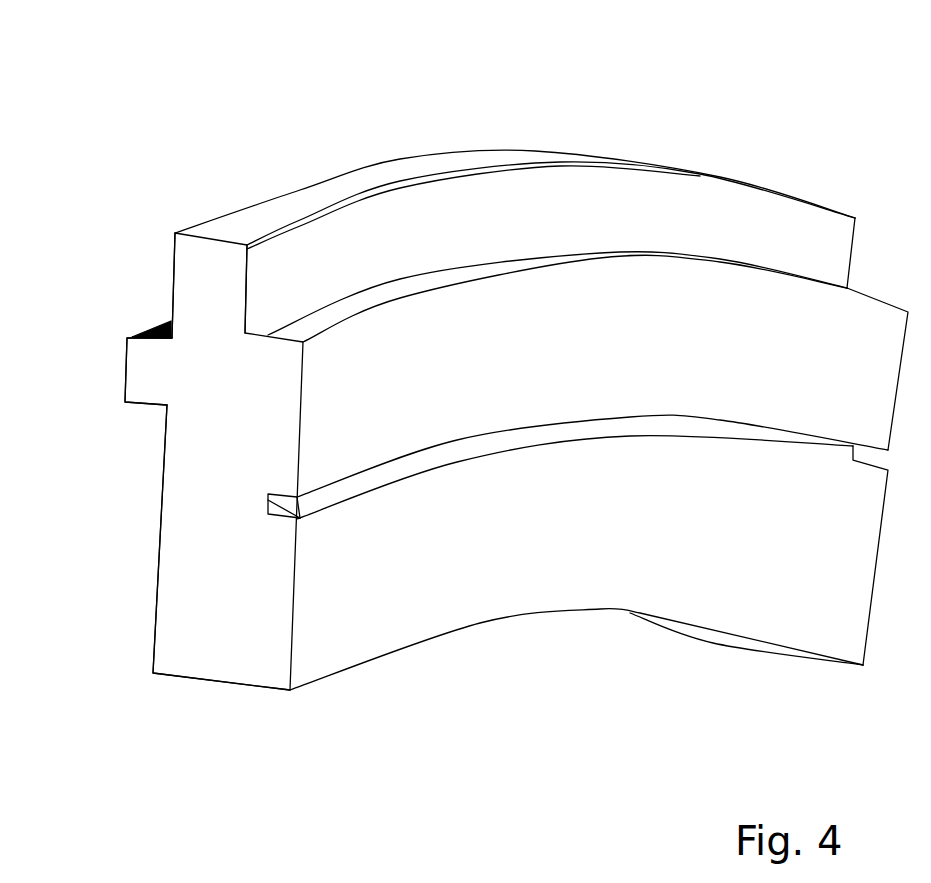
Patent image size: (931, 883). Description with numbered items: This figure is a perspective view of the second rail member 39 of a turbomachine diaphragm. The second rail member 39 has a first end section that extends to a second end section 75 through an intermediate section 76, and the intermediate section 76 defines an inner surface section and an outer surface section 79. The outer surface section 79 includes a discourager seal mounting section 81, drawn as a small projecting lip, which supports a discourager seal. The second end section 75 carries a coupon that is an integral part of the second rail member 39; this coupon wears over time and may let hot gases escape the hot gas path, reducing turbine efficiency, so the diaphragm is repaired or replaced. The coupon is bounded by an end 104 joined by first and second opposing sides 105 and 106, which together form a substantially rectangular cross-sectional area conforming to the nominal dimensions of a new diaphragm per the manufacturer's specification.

The second rail member 39 is at (110, 587).
The second end section 75 is at (132, 368).
The intermediate section 76 is at (207, 620).
The outer surface section 79 is at (320, 650).
The discourager seal mounting section 81 is at (295, 528).
The end 104 is at (272, 213).
The first side 105 is at (172, 273).
The second side 106 is at (250, 290).